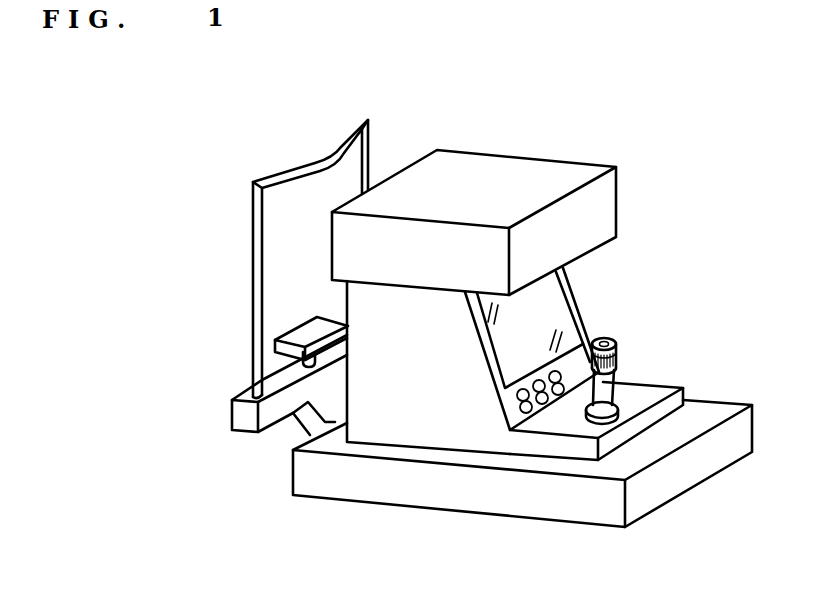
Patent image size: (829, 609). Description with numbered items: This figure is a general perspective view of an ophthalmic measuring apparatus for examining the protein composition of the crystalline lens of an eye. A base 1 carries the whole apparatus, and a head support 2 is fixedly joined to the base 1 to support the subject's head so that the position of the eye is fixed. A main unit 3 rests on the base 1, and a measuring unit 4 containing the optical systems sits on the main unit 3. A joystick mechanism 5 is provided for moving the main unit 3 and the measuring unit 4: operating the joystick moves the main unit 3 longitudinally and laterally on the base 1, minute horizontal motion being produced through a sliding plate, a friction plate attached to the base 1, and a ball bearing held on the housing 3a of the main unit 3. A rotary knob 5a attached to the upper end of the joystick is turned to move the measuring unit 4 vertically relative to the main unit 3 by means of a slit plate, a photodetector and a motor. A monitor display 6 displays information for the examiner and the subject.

The base 1 is at (378, 493).
The head support 2 is at (270, 445).
The main unit 3 is at (442, 418).
The housing 3a is at (563, 447).
The measuring unit 4 is at (553, 173).
The joystick mechanism 5 is at (641, 343).
The rotary knob 5a is at (618, 352).
The monitor display 6 is at (550, 293).